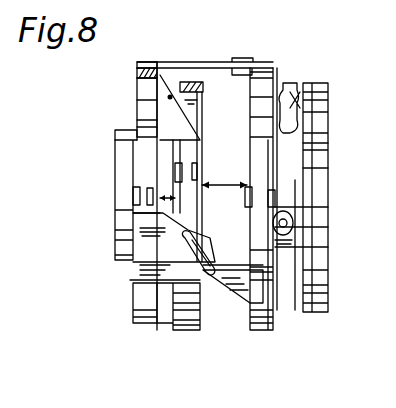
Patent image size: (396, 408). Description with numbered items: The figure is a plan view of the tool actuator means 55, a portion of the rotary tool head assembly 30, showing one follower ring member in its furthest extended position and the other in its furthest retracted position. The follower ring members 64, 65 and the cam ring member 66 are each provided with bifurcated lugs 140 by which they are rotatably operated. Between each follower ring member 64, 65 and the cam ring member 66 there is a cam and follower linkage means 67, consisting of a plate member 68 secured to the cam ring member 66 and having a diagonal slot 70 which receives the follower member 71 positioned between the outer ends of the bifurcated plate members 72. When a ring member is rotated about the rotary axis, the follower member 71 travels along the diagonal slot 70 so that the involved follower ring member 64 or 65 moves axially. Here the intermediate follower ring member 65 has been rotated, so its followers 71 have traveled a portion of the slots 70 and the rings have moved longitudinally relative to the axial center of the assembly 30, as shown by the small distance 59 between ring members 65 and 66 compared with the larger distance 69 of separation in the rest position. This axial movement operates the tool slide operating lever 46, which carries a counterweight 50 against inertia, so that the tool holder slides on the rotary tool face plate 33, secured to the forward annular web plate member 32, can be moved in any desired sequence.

The rotary tool head assembly 30 is at (140, 85).
The forward annular web plate member 32 is at (300, 145).
The rotary tool face plate 33 is at (310, 168).
The tool slide operating lever 46 is at (310, 86).
The counterweight 50 is at (293, 225).
The tool actuator means 55 is at (145, 232).
The small distance 59 is at (150, 212).
The follower ring member 64 is at (278, 78).
The follower ring member 65 is at (200, 88).
The cam ring member 66 is at (137, 70).
The cam and follower linkage means 67 is at (248, 60).
The plate member 68 is at (157, 62).
The distance 69 is at (236, 184).
The diagonal slot 70 is at (183, 245).
The follower member 71 is at (170, 96).
The bifurcated plate members 72 is at (255, 62).
The bifurcated lugs 140 is at (137, 196).